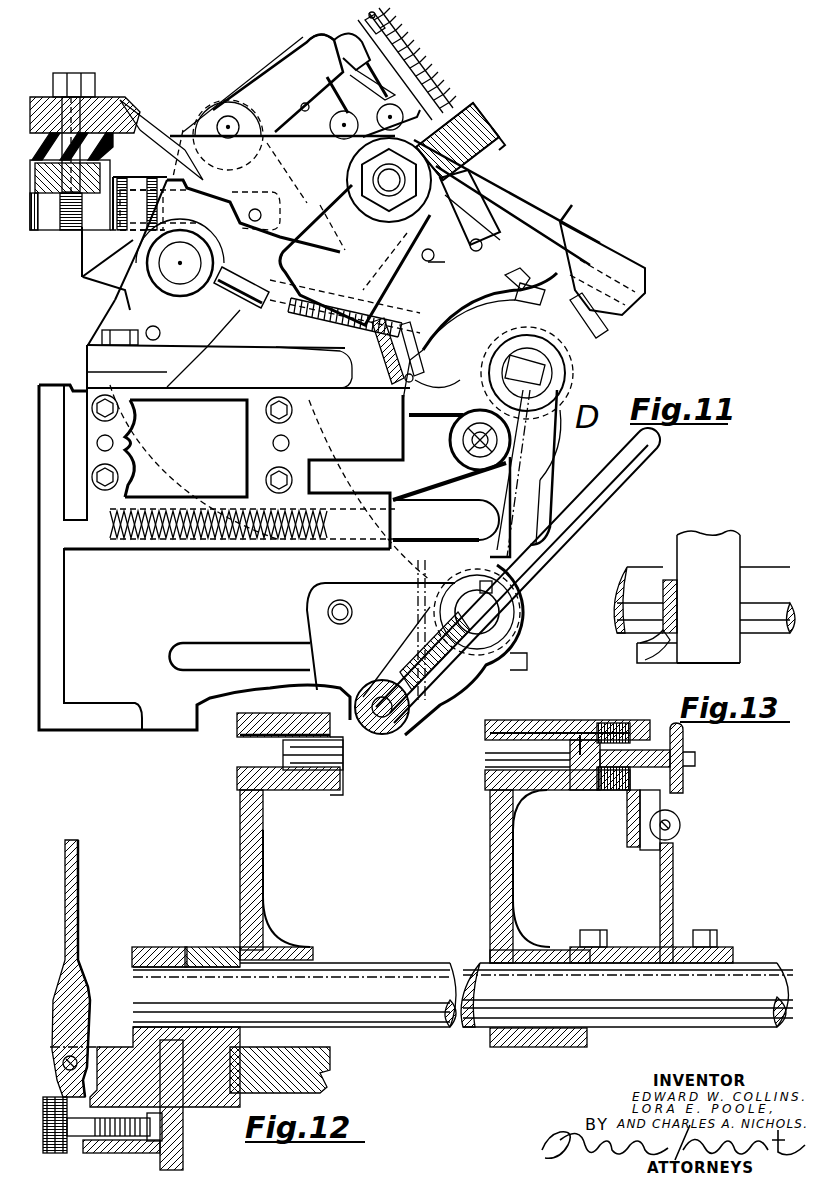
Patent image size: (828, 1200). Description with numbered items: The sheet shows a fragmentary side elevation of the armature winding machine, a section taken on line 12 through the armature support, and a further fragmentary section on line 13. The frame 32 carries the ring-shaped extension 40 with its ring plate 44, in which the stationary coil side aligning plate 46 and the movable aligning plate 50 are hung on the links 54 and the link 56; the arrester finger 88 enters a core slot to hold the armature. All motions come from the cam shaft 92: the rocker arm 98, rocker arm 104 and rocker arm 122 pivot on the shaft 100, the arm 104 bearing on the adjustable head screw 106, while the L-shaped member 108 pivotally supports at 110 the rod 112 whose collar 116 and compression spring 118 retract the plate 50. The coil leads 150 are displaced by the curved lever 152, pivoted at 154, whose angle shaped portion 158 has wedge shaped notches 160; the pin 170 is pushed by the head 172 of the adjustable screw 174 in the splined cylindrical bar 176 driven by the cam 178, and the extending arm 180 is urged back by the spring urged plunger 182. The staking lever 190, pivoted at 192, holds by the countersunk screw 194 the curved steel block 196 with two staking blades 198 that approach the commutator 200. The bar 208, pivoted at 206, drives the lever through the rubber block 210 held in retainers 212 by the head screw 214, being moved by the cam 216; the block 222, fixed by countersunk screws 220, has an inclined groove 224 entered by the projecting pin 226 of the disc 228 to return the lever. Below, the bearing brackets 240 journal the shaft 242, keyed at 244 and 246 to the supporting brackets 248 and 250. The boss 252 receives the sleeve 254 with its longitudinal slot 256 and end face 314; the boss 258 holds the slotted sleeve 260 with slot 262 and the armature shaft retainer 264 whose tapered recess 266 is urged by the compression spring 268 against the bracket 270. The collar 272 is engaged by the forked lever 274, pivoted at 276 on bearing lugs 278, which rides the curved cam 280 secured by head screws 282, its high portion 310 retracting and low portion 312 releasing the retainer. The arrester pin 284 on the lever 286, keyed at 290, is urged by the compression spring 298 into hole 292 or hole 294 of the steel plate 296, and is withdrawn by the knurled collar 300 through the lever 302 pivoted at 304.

In FIG. 11, the section line 12 is at (464, 236).
In FIG. 12, the section line 13 is at (733, 908).
In FIG. 11, the frame 32 is at (107, 313).
In FIG. 11, the ring-shaped extension 40 is at (485, 125).
In FIG. 11, the ring plate 44 is at (498, 145).
In FIG. 11, the stationary coil side aligning plate 46 is at (440, 283).
In FIG. 11, the movable coil side aligning plate 50 is at (490, 257).
In FIG. 11, the links 54 is at (364, 113).
In FIG. 11, the link 56 is at (462, 240).
In FIG. 11, the finger 88 is at (363, 318).
In FIG. 11, the cam shaft 92 is at (193, 288).
In FIG. 11, the rocker arm 98 is at (262, 72).
In FIG. 11, the shaft 100 is at (226, 120).
In FIG. 11, the rocker arm 104 is at (308, 42).
In FIG. 11, the adjustable head screw 106 is at (402, 45).
In FIG. 11, the L-shaped member 108 is at (358, 22).
In FIG. 11, the pivot 110 is at (375, 15).
In FIG. 11, the rod 112 is at (412, 70).
In FIG. 11, the collar 116 is at (385, 31).
In FIG. 11, the compression spring 118 is at (420, 84).
In FIG. 11, the rocker arm 122 is at (309, 107).
In FIG. 11, the coil leads 150 is at (158, 668).
In FIG. 11, the curved lever 152 is at (426, 386).
In FIG. 11, the pivot 154 is at (511, 458).
In FIG. 11, the angle shaped portion 158 is at (541, 296).
In FIG. 11, the wedge shaped notches 160 is at (522, 276).
In FIG. 11, the pin 170 is at (423, 369).
In FIG. 11, the head 172 is at (415, 358).
In FIG. 11, the adjustable screw 174 is at (378, 402).
In FIG. 11, the splined cylindrical bar 176 is at (245, 278).
In FIG. 11, the cam 178 is at (212, 243).
In FIG. 11, the extending arm 180 is at (506, 523).
In FIG. 11, the spring urged plunger 182 is at (462, 520).
In FIG. 11, the staking lever 190 is at (520, 207).
In FIG. 11, the pivot 192 is at (355, 231).
In FIG. 11, the countersunk screw 194 is at (615, 272).
In FIG. 11, the curved steel block 196 is at (622, 310).
In FIG. 11, the staking blades 198 is at (587, 331).
In FIG. 11, the commutator 200 is at (573, 363).
In FIG. 11, the pivot 206 is at (257, 209).
In FIG. 11, the bar 208 is at (48, 222).
In FIG. 11, the rubber block 210 is at (130, 152).
In FIG. 11, the retainers 212 is at (128, 118).
In FIG. 11, the head screw 214 is at (72, 105).
In FIG. 11, the cam 216 is at (124, 328).
In FIG. 11, the countersunk screws 220 is at (168, 144).
In FIG. 11, the block 222 is at (95, 255).
In FIG. 11, the inclined groove 224 is at (115, 275).
In FIG. 11, the projecting pin 226 is at (161, 334).
In FIG. 11, the disc 228 is at (172, 310).
In FIG. 11, the bearing brackets 240 is at (490, 690).
In FIG. 12, the bearing brackets 240 is at (207, 950).
In FIG. 11, the shaft 242 is at (516, 618).
In FIG. 13, the shaft 242 is at (645, 575).
In FIG. 12, the shaft 242 is at (382, 974).
In FIG. 11, the key 244 is at (480, 586).
In FIG. 12, the key 244 is at (313, 958).
In FIG. 12, the key 246 is at (490, 951).
In FIG. 11, the armature shaft supporting bracket 248 is at (545, 506).
In FIG. 12, the armature shaft supporting bracket 248 is at (263, 893).
In FIG. 11, the armature shaft supporting bracket 250 is at (546, 479).
In FIG. 12, the armature shaft supporting bracket 250 is at (490, 872).
In FIG. 12, the boss 252 is at (260, 720).
In FIG. 12, the sleeve 254 is at (305, 796).
In FIG. 12, the longitudinal slot 256 is at (340, 766).
In FIG. 11, the boss 258 is at (565, 379).
In FIG. 12, the boss 258 is at (541, 725).
In FIG. 12, the sleeve 260 is at (496, 790).
In FIG. 11, the slot 262 is at (500, 353).
In FIG. 12, the slot 262 is at (496, 759).
In FIG. 12, the armature shaft retainer 264 is at (590, 733).
In FIG. 12, the tapered recess 266 is at (581, 735).
In FIG. 12, the compression spring 268 is at (633, 724).
In FIG. 12, the bracket 270 is at (627, 828).
In FIG. 12, the collar 272 is at (684, 785).
In FIG. 13, the lever 274 is at (677, 596).
In FIG. 12, the lever 274 is at (674, 858).
In FIG. 12, the pivot 276 is at (681, 826).
In FIG. 12, the bearing lugs 278 is at (658, 850).
In FIG. 13, the curved cam 280 is at (741, 658).
In FIG. 12, the curved cam 280 is at (734, 956).
In FIG. 12, the head screws 282 is at (604, 935).
In FIG. 11, the arrester pin 284 is at (385, 690).
In FIG. 12, the arrester pin 284 is at (184, 1121).
In FIG. 12, the lever 286 is at (112, 1046).
In FIG. 12, the key 290 is at (152, 956).
In FIG. 11, the hole 292 is at (413, 766).
In FIG. 12, the hole 292 is at (184, 1130).
In FIG. 11, the hole 294 is at (353, 612).
In FIG. 11, the steel plate 296 is at (308, 628).
In FIG. 12, the steel plate 296 is at (184, 1150).
In FIG. 12, the compression spring 298 is at (110, 1145).
In FIG. 11, the knurled collar 300 is at (395, 736).
In FIG. 12, the knurled collar 300 is at (48, 1125).
In FIG. 11, the lever 302 is at (562, 556).
In FIG. 12, the lever 302 is at (77, 950).
In FIG. 11, the pivot 304 is at (412, 652).
In FIG. 12, the pivot 304 is at (63, 1062).
In FIG. 13, the high portion 310 is at (640, 651).
In FIG. 13, the low portion 312 is at (676, 663).
In FIG. 12, the end face 314 is at (344, 792).